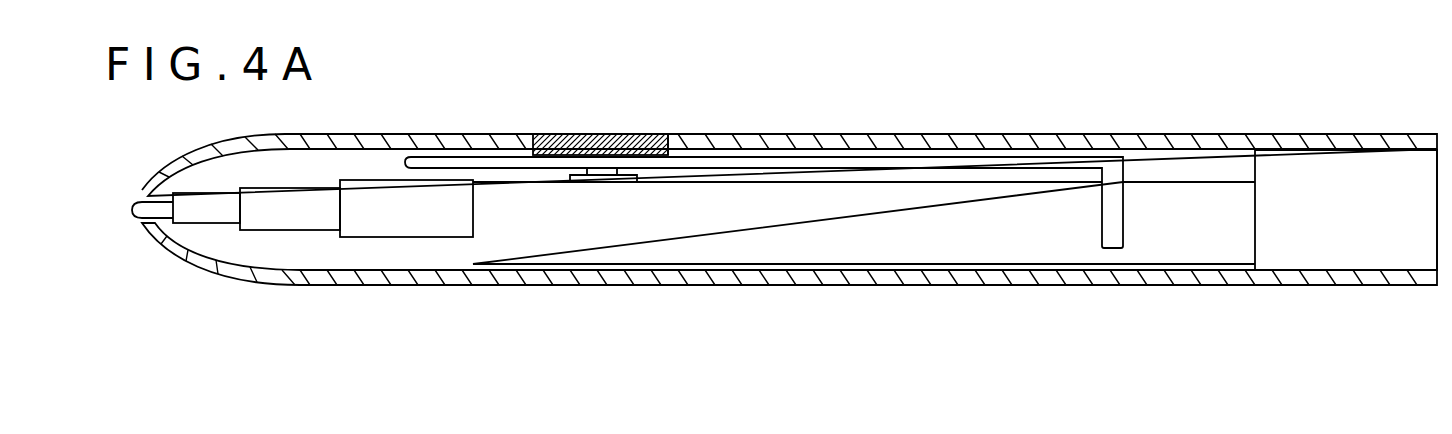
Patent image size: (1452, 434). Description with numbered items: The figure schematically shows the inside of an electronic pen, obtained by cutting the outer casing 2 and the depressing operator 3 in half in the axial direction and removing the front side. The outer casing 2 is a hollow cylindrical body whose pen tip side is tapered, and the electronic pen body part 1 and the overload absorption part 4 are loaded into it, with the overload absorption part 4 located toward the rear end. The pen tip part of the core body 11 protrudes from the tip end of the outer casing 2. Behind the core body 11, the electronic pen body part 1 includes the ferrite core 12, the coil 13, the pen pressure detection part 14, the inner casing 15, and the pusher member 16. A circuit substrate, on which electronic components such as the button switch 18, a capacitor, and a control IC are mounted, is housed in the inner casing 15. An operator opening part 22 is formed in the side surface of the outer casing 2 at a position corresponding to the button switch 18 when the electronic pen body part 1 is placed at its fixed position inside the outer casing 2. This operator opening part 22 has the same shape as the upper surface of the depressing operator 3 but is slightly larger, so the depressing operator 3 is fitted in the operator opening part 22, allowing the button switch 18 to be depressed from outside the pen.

The electronic pen body part 1 is at (518, 243).
The outer casing 2 is at (853, 133).
The depressing operator 3 is at (575, 132).
The overload absorption part 4 is at (1340, 245).
The core body 11 is at (132, 208).
The ferrite core 12 is at (207, 215).
The coil 13 is at (303, 220).
The pen pressure detection part 14 is at (435, 220).
The inner casing 15 is at (743, 253).
The pusher member 16 is at (948, 160).
The button switch 18 is at (592, 183).
The operator opening part 22 is at (668, 132).